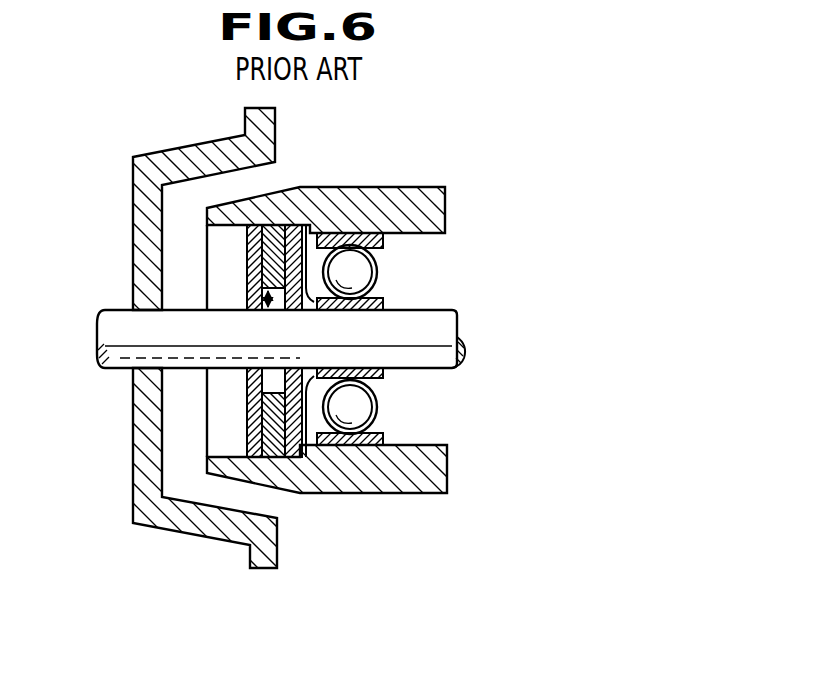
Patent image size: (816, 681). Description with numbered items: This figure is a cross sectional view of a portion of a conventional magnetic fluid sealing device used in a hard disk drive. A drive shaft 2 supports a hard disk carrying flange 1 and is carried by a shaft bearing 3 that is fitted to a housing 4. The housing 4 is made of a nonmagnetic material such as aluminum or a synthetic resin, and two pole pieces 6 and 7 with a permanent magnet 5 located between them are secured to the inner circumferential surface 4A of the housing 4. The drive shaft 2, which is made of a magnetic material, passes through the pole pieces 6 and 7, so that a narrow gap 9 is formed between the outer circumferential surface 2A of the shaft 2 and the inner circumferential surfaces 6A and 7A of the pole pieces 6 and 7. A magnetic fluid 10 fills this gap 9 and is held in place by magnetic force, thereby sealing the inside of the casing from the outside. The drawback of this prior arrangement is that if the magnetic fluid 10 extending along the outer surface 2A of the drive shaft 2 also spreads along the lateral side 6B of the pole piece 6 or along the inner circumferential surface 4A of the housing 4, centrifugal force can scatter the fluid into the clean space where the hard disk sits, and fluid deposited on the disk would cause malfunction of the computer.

The hard disk carrying flange 1 is at (133, 483).
The drive shaft 2 is at (430, 325).
The outer circumferential surface 2A is at (433, 369).
The shaft bearing 3 is at (395, 408).
The housing 4 is at (392, 190).
The inner circumferential surface 4A is at (225, 225).
The permanent magnet 5 is at (322, 465).
The pole piece 6 is at (265, 460).
The inner circumferential surface 6A is at (250, 306).
The lateral side 6B is at (243, 248).
The pole piece 7 is at (350, 448).
The inner circumferential surface 7A is at (306, 258).
The narrow gap 9 is at (270, 310).
The magnetic fluid 10 is at (244, 374).